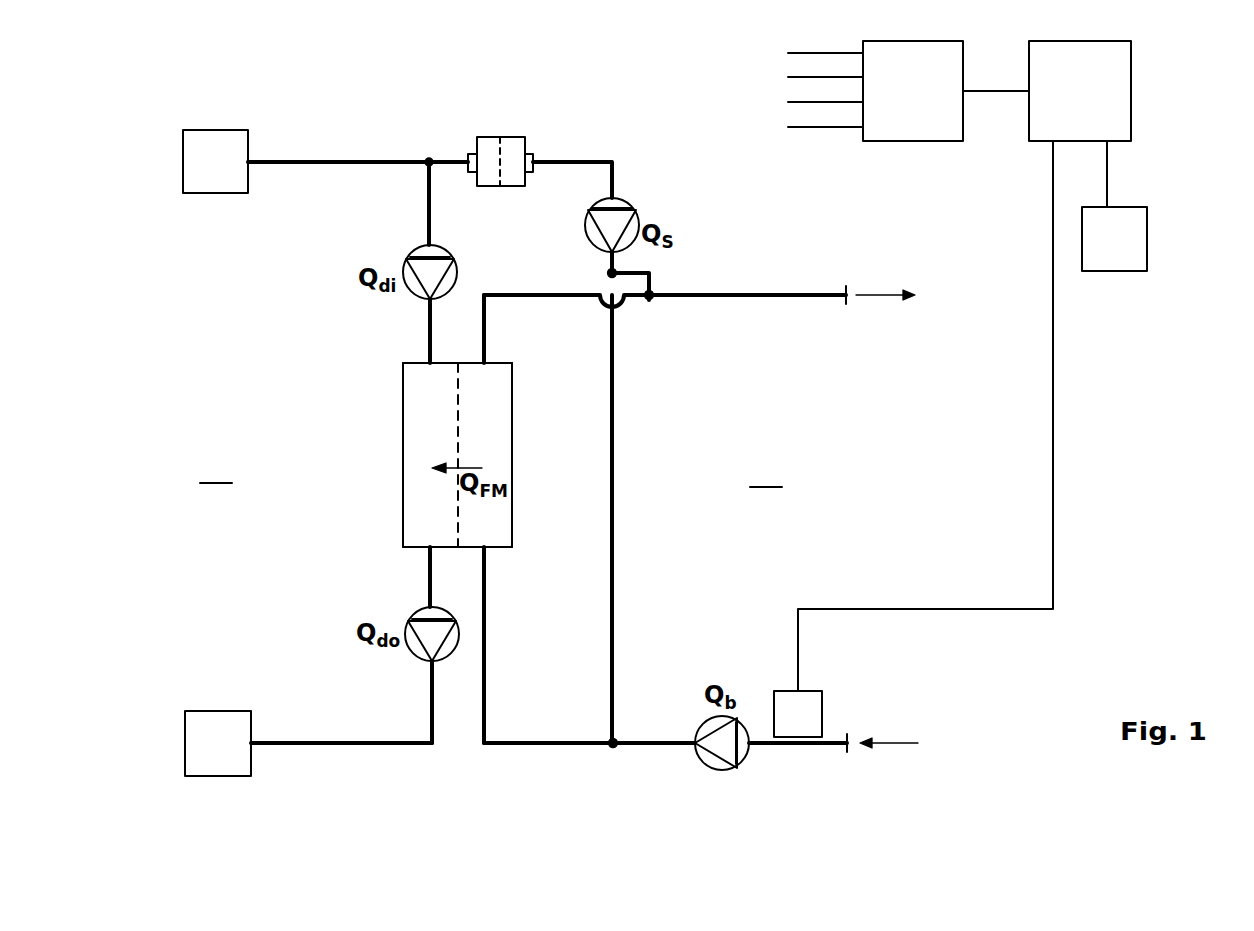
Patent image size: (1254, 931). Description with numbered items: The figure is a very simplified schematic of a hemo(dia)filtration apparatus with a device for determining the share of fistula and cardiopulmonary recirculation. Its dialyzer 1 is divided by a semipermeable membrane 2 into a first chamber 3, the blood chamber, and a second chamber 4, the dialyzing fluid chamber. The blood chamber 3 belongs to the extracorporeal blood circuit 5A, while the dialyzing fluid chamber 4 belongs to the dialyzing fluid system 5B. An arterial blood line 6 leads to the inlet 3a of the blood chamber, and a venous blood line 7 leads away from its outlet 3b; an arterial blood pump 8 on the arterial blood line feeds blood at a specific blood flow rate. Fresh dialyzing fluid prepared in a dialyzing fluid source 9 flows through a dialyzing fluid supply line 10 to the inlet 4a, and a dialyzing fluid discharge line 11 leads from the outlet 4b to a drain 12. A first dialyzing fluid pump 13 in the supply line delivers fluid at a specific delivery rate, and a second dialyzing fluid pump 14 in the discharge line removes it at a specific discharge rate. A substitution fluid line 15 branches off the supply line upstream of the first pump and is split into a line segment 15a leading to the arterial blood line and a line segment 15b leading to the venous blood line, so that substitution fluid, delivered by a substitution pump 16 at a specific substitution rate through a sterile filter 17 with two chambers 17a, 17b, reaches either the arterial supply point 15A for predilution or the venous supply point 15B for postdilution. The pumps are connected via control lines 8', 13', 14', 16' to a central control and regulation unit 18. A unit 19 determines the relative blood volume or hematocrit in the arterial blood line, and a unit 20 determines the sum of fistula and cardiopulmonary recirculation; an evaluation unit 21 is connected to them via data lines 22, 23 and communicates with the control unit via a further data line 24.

The dialyzer 1 is at (383, 492).
The semipermeable membrane 2 is at (460, 398).
The first chamber 3 is at (512, 425).
The inlet 3a is at (490, 549).
The outlet 3b is at (490, 360).
The second chamber 4 is at (405, 500).
The inlet 4a is at (426, 362).
The outlet 4b is at (425, 548).
The extracorporeal blood circuit 5A is at (768, 474).
The dialyzing fluid system 5B is at (217, 470).
The arterial blood line 6 is at (800, 748).
The venous blood line 7 is at (742, 301).
The arterial blood pump 8 is at (759, 764).
The control line 8' is at (755, 402).
The dialyzing fluid source 9 is at (203, 163).
The dialyzing fluid supply line 10 is at (337, 162).
The dialyzing fluid discharge line 11 is at (340, 745).
The drain 12 is at (205, 743).
The first dialyzing fluid pump 13 is at (408, 230).
The control line 13' is at (584, 166).
The second dialyzing fluid pump 14 is at (441, 684).
The control line 14' is at (593, 393).
The substitution fluid line 15 is at (582, 162).
The line segment 15a is at (614, 533).
The line segment 15b is at (638, 273).
The arterial supply point 15A is at (615, 749).
The venous supply point 15B is at (650, 301).
The substitution pump 16 is at (571, 235).
The control line 16' is at (727, 161).
The sterile filter 17 is at (503, 137).
The chamber 17a is at (486, 145).
The chamber 17b is at (517, 145).
The central control and regulation unit 18 is at (913, 141).
The unit for determining relative blood volume 19 is at (822, 715).
The unit for determining the sum of fistula recirculation and cardiopulmonary recirc 20 is at (1115, 271).
The evaluation unit 21 is at (1131, 91).
The data line 22 is at (1053, 254).
The data line 23 is at (1107, 177).
The further data line 24 is at (997, 91).